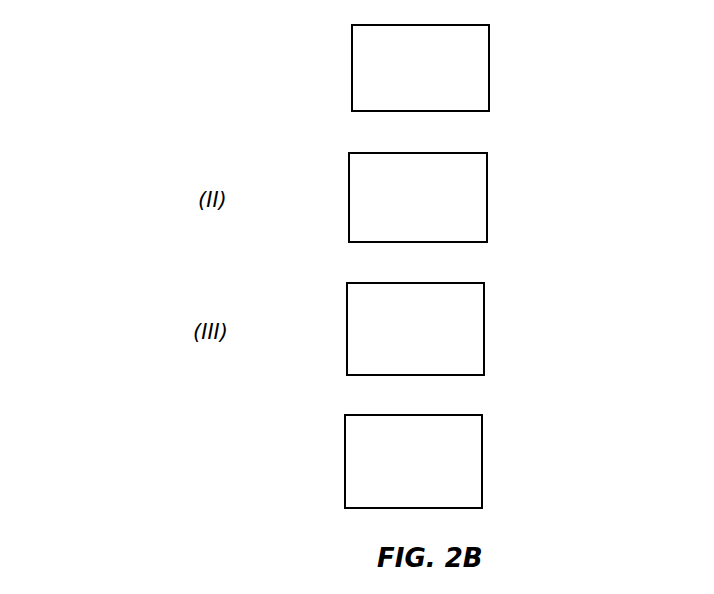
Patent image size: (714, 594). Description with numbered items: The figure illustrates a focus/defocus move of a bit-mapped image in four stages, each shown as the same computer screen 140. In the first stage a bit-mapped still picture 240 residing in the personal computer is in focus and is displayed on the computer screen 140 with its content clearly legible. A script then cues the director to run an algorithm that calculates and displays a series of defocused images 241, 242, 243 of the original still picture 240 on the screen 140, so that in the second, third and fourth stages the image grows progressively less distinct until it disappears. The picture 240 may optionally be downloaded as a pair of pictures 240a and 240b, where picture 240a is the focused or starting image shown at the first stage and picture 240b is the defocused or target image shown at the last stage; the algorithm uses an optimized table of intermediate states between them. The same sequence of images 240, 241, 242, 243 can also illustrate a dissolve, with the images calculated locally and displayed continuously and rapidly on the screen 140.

The computer screen 140 is at (490, 65).
The bit-mapped still picture 240 is at (360, 82).
The defocused image 241 is at (358, 202).
The defocused image 242 is at (357, 333).
The defocused image 243 is at (353, 463).
The focused starting picture 240a is at (190, 63).
The defocused target picture 240b is at (175, 459).